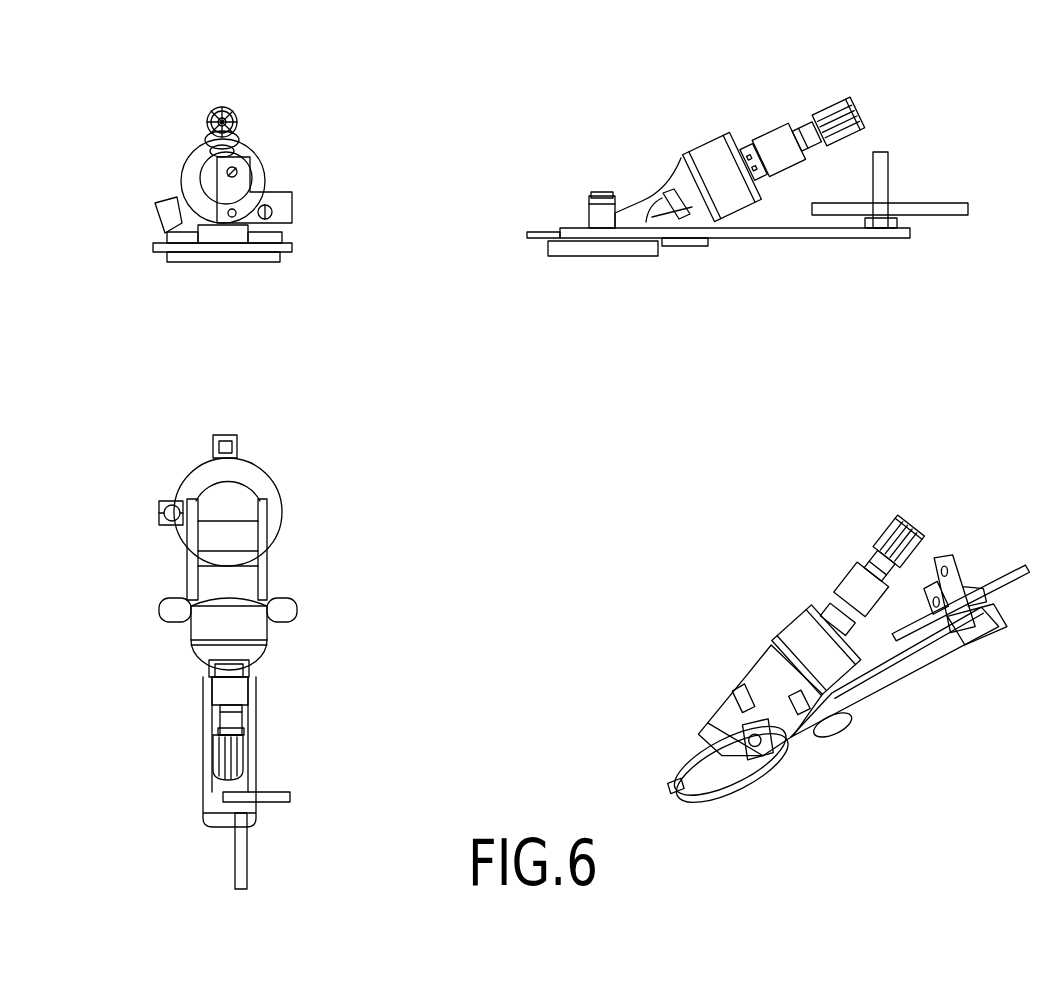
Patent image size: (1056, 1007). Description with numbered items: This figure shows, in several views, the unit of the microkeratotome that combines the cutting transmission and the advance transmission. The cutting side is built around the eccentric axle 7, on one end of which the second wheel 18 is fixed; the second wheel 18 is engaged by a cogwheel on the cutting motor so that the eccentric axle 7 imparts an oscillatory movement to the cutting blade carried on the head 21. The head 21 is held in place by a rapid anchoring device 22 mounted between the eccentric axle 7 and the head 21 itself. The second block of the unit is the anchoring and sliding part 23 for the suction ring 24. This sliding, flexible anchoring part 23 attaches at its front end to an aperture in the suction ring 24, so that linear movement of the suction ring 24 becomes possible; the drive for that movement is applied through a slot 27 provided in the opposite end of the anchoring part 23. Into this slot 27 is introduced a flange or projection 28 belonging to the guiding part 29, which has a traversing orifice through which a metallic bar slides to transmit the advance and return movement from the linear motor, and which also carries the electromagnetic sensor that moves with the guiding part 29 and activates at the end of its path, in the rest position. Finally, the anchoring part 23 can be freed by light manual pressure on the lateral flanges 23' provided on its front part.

The eccentric axle 7 is at (800, 137).
The second wheel 18 is at (240, 117).
The head 21 is at (677, 180).
The rapid anchoring device 22 is at (183, 167).
The anchoring and sliding part 23 is at (532, 527).
The lateral flanges 23' is at (474, 696).
The suction ring 24 is at (253, 262).
The slot 27 is at (980, 630).
The flange or projection 28 is at (892, 228).
The guiding part 29 is at (887, 203).